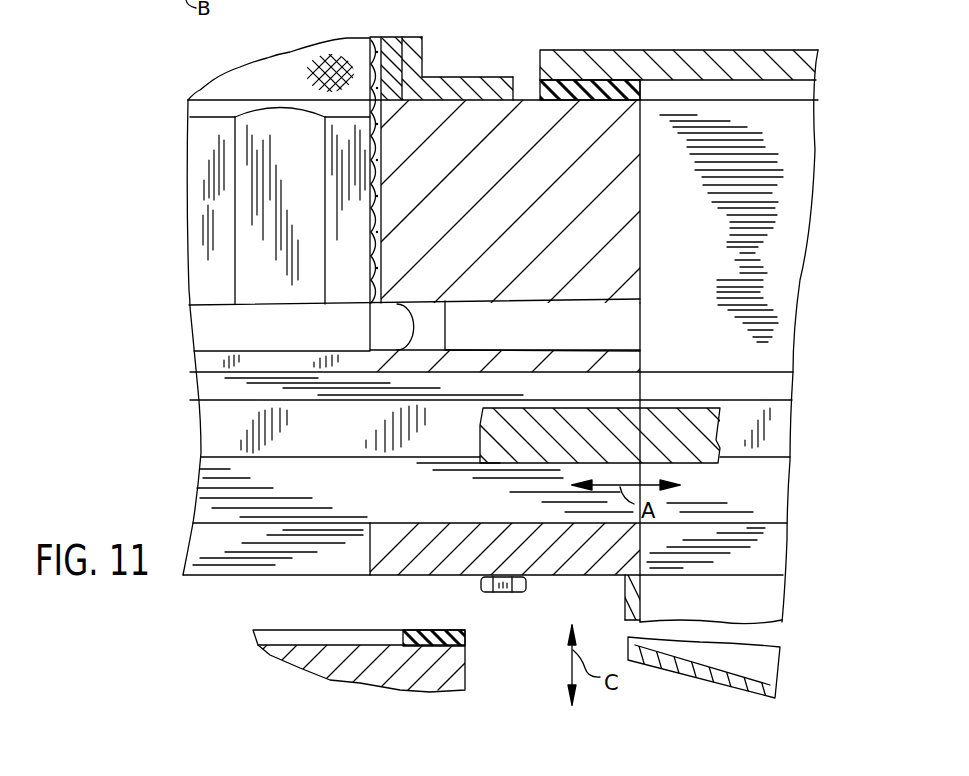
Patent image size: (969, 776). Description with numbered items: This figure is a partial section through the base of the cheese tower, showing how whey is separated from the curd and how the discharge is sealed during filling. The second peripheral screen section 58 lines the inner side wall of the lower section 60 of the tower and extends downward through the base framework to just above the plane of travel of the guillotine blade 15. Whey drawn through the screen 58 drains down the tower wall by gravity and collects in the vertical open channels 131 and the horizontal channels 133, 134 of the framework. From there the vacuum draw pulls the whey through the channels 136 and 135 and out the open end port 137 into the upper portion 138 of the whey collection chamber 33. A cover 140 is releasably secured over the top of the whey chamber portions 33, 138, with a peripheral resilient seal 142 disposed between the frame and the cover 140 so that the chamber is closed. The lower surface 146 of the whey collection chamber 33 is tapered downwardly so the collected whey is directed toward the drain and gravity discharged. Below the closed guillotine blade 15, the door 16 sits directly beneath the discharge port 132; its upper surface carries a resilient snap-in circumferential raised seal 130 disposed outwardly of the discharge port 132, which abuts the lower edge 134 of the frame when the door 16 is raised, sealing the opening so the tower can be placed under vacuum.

The guillotine blade 15 is at (710, 428).
The door 16 is at (455, 670).
The whey collection chamber 33 is at (773, 590).
The second peripheral screen section 58 is at (383, 158).
The lower section of the tower 60 is at (347, 50).
The circumferential raised seal 130 is at (268, 630).
The open channels 131 is at (240, 227).
The discharge port 132 is at (188, 622).
The horizontal channel 133 is at (207, 328).
The horizontal channel 134 is at (413, 577).
The channel 135 is at (620, 322).
The channel 136 is at (393, 327).
The open end port 137 is at (642, 337).
The upper portion of the whey collection chamber 138 is at (780, 297).
The cover 140 is at (790, 50).
The peripheral resilient seal 142 is at (617, 83).
The lower surface of the whey collection chamber 146 is at (735, 675).